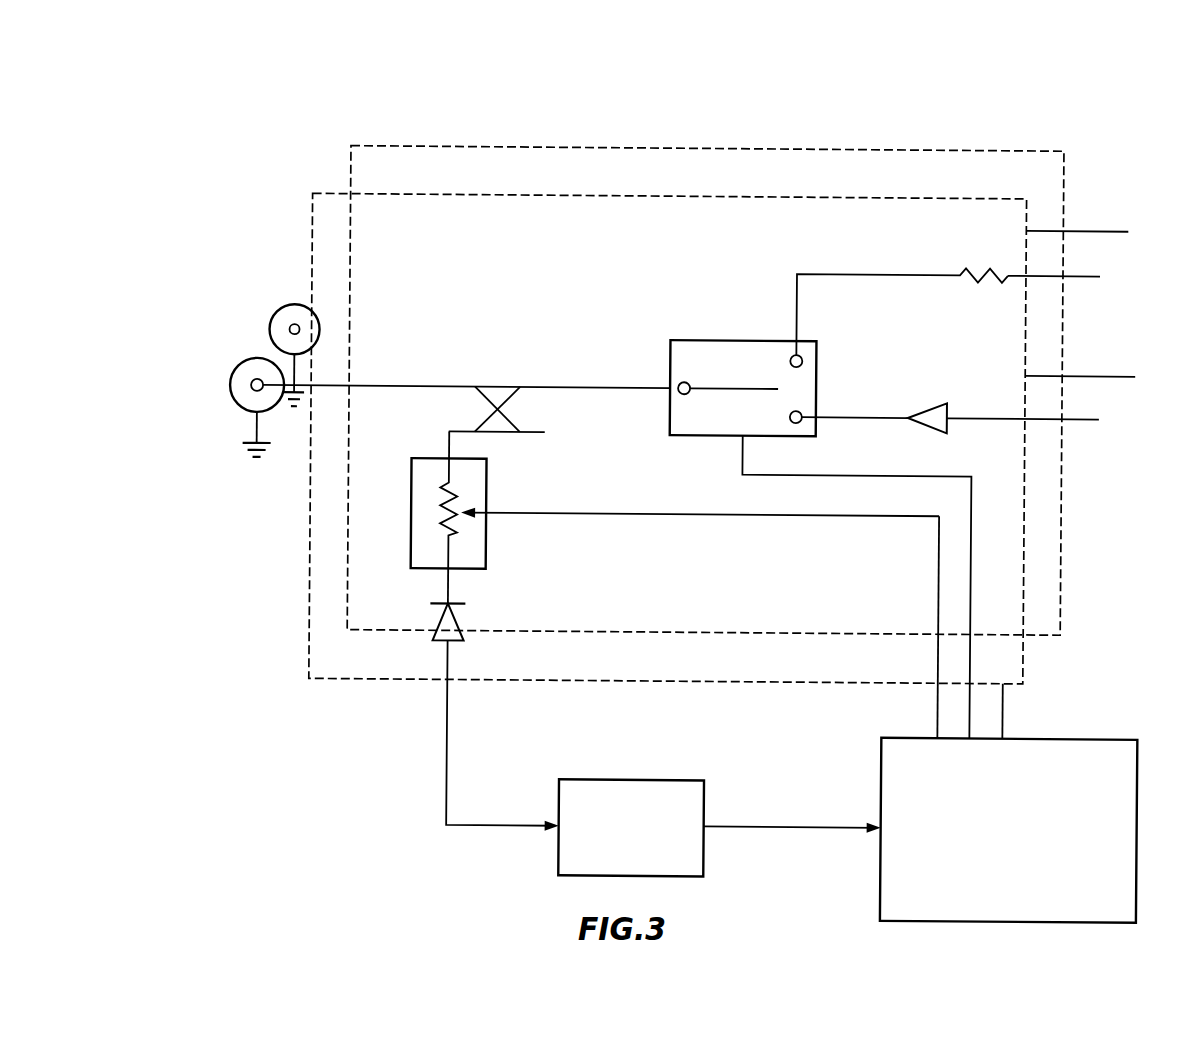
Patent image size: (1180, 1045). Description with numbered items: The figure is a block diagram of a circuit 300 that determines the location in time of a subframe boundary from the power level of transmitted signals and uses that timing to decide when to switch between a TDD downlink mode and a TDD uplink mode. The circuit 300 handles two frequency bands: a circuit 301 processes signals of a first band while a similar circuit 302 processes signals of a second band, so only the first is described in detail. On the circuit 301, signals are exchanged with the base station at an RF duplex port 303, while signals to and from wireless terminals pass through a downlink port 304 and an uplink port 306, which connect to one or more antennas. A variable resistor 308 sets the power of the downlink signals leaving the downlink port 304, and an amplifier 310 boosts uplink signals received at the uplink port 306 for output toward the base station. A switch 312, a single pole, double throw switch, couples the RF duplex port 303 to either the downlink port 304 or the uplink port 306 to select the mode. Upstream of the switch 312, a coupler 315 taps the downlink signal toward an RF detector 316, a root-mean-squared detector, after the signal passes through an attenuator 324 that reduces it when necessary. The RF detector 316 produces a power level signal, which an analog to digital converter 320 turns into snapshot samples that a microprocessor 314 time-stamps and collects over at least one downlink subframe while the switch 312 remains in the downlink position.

The circuit 300 is at (240, 86).
The circuit 301 is at (330, 193).
The circuit 302 is at (491, 146).
The RF duplex port 303 is at (238, 404).
The downlink port 304 is at (1090, 276).
The uplink port 306 is at (1079, 420).
The variable resistor 308 is at (970, 267).
The amplifier 310 is at (921, 407).
The switch 312 is at (721, 340).
The microprocessor 314 is at (1065, 736).
The coupler 315 is at (499, 388).
The RF detector 316 is at (463, 625).
The analog to digital converter 320 is at (657, 779).
The attenuator 324 is at (488, 490).